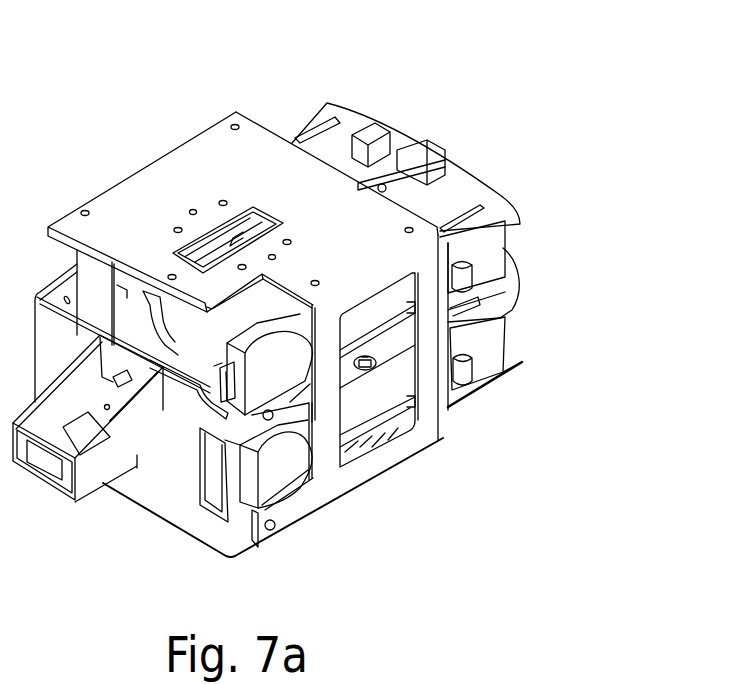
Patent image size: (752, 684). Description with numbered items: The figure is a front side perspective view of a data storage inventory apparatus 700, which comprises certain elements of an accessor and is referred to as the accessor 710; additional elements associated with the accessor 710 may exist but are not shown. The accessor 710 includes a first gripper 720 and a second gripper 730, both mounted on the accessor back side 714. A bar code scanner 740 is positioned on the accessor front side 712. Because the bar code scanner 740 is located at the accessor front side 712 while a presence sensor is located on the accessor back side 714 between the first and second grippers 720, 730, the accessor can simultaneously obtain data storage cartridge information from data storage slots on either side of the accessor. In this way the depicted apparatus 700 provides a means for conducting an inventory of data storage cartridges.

The data storage inventory apparatus 700 is at (341, 318).
The accessor 710 is at (128, 172).
The accessor front side 712 is at (188, 522).
The accessor back side 714 is at (453, 432).
The first gripper 720 is at (516, 221).
The second gripper 730 is at (520, 354).
The bar code scanner 740 is at (42, 478).